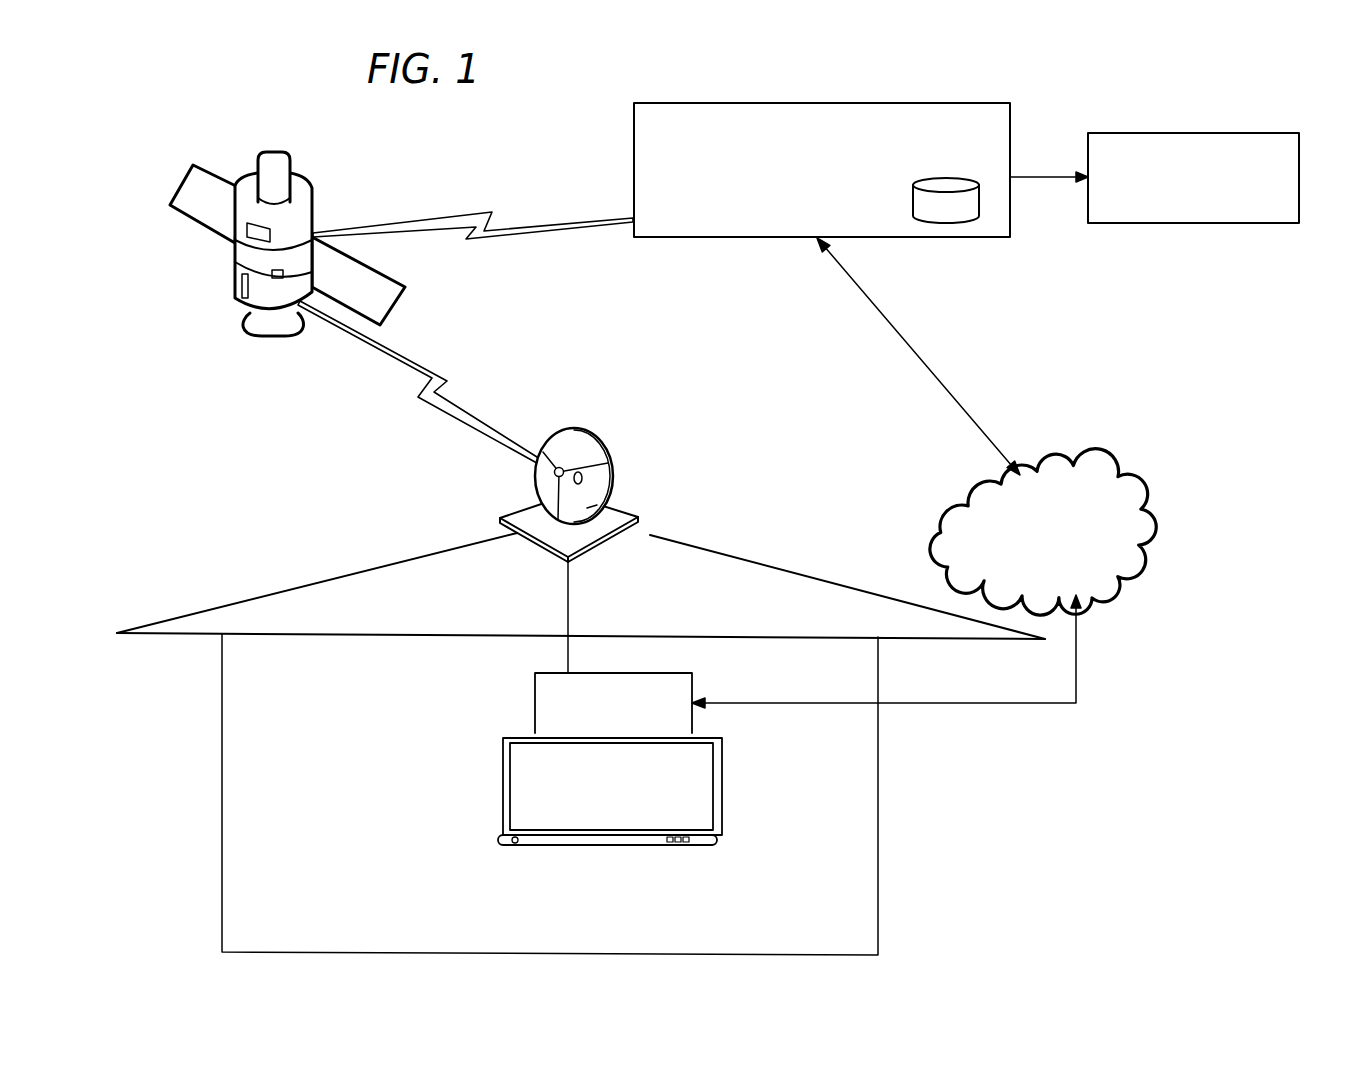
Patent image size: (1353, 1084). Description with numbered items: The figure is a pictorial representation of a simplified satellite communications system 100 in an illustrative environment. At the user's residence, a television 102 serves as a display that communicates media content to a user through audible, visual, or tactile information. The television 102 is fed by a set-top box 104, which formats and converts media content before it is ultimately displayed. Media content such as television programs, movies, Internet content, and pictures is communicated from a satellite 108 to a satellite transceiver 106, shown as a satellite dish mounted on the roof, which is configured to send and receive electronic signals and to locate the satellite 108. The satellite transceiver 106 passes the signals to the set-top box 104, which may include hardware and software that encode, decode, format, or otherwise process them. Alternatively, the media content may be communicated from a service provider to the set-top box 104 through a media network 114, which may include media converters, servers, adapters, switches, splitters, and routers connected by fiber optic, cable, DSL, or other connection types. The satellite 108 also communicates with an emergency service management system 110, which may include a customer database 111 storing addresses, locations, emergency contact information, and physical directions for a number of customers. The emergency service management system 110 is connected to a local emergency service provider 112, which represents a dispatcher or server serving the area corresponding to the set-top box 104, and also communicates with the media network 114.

The communications system 100 is at (127, 110).
The television 102 is at (593, 799).
The set-top box 104 is at (637, 726).
The satellite transceiver 106 is at (608, 500).
The satellite 108 is at (366, 295).
The emergency service management system 110 is at (803, 196).
The customer database 111 is at (928, 216).
The local emergency service provider 112 is at (1176, 214).
The media network 114 is at (1067, 554).